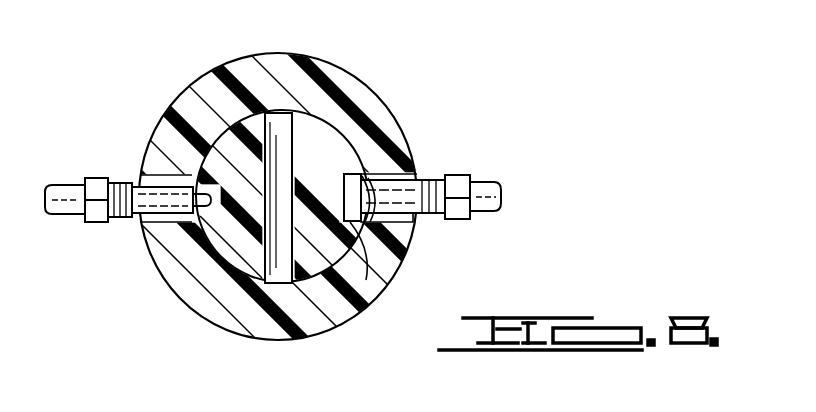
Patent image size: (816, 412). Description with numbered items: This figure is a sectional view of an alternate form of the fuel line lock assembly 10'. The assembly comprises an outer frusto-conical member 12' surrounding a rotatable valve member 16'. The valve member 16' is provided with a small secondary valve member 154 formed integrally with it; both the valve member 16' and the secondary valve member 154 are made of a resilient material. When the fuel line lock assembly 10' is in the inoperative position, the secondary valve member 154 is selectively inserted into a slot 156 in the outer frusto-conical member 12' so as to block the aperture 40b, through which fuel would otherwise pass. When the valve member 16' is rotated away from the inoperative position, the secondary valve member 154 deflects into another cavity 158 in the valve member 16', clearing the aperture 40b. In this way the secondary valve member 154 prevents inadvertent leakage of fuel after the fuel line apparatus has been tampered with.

The fuel line lock assembly 10' is at (264, 217).
The outer frusto-conical member 12' is at (342, 208).
The valve member 16' is at (310, 152).
The slot 156 is at (372, 174).
The aperture 40b is at (420, 177).
The secondary valve member 154 is at (373, 216).
The cavity 158 is at (360, 232).